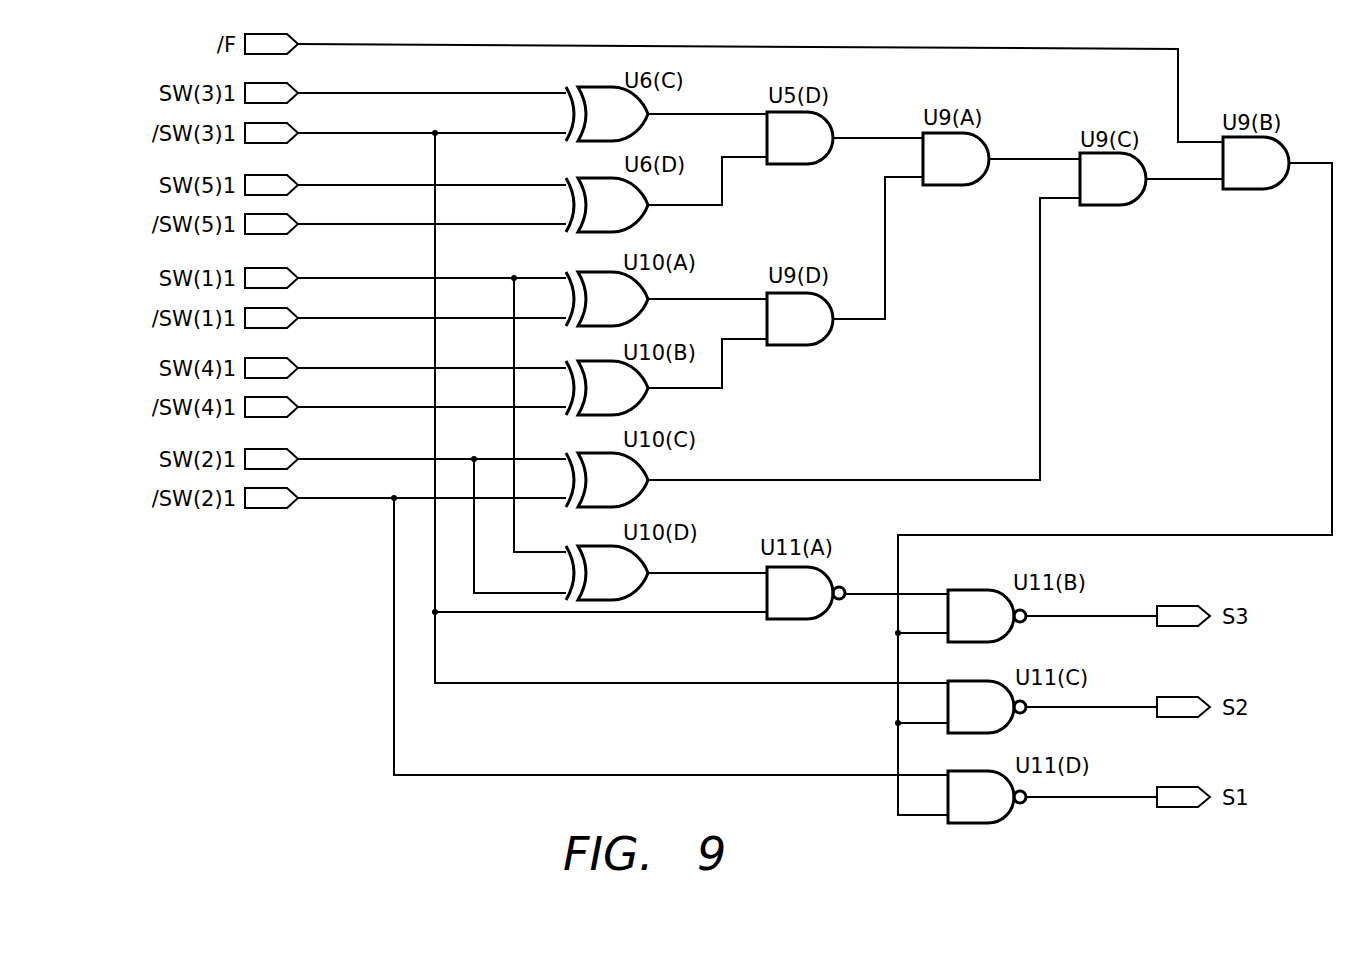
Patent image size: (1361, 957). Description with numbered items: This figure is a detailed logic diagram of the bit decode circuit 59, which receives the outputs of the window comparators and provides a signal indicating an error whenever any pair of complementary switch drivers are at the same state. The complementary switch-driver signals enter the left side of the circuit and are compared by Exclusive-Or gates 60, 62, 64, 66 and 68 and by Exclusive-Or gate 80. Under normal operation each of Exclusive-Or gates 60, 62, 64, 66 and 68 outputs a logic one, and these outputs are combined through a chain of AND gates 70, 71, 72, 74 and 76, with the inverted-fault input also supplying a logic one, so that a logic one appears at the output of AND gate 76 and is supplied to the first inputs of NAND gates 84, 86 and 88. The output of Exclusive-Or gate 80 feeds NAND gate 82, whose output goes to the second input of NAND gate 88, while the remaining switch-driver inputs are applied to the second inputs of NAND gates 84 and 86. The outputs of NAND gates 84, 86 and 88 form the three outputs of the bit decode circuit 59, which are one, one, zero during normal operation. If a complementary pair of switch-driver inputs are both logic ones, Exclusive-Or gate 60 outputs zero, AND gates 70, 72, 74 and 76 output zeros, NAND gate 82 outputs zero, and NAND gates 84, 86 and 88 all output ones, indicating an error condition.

The bit decode circuit 59 is at (305, 574).
The Exclusive-Or gate 60 is at (603, 102).
The Exclusive-Or gate 62 is at (603, 189).
The Exclusive-Or gate 64 is at (603, 276).
The Exclusive-Or gate 66 is at (603, 369).
The Exclusive-Or gate 68 is at (603, 461).
The Exclusive-Or gate 80 is at (603, 553).
The AND gate 70 is at (790, 150).
The AND gate 71 is at (791, 332).
The AND gate 72 is at (946, 171).
The AND gate 74 is at (1103, 189).
The AND gate 76 is at (1244, 173).
The NAND gate 82 is at (790, 605).
The NAND gate 84 is at (985, 780).
The NAND gate 86 is at (985, 690).
The NAND gate 88 is at (985, 597).